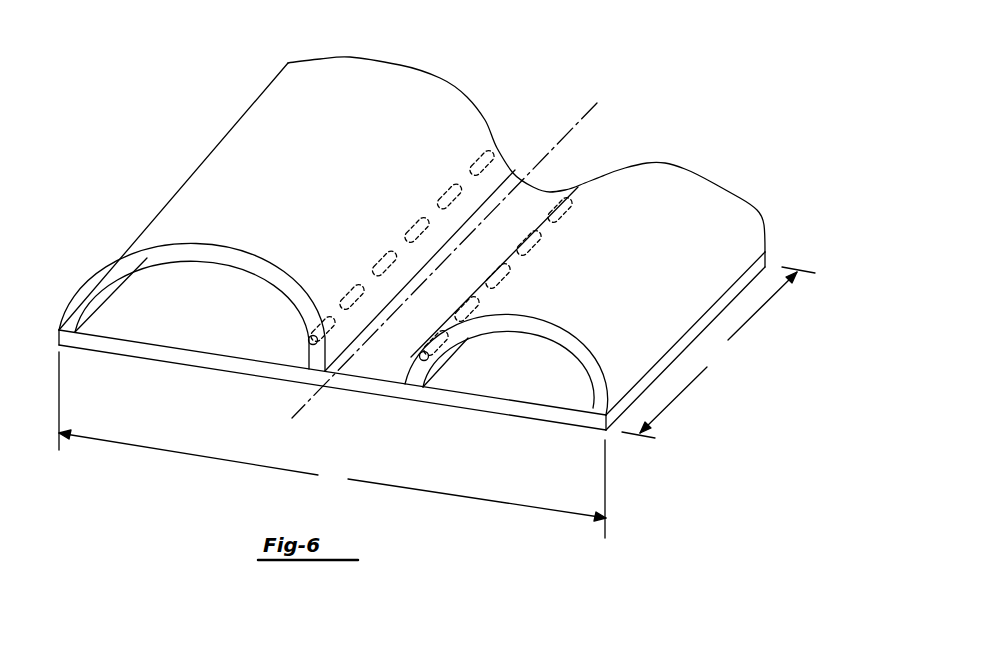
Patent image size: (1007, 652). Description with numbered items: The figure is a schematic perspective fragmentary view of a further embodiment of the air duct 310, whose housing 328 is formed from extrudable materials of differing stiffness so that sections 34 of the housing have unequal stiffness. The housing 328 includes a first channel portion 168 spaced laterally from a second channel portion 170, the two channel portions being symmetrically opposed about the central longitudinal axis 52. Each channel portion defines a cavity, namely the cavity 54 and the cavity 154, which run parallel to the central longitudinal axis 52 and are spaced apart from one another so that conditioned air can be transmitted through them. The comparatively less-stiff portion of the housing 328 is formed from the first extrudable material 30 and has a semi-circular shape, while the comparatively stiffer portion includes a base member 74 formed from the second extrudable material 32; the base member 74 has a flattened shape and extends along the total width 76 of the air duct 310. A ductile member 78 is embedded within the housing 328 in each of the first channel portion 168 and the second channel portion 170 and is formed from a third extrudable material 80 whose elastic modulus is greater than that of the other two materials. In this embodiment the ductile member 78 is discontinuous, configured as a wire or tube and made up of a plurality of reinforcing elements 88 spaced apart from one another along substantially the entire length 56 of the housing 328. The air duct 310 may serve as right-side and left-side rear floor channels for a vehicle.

The air duct 310 is at (236, 60).
The housing 328 is at (465, 83).
The central longitudinal axis 52 is at (599, 106).
The section 34 is at (172, 143).
The first extrudable material 30 is at (224, 246).
The first channel portion 168 is at (282, 193).
The second channel portion 170 is at (595, 278).
The cavity 54 is at (161, 325).
The cavity 154 is at (528, 385).
The reinforcing elements 88 is at (440, 188).
The third extrudable material 80 is at (312, 325).
The ductile member 78 is at (309, 340).
The base member 74 is at (383, 395).
The second extrudable material 32 is at (221, 362).
The total width 76 is at (332, 445).
The length 56 is at (718, 352).